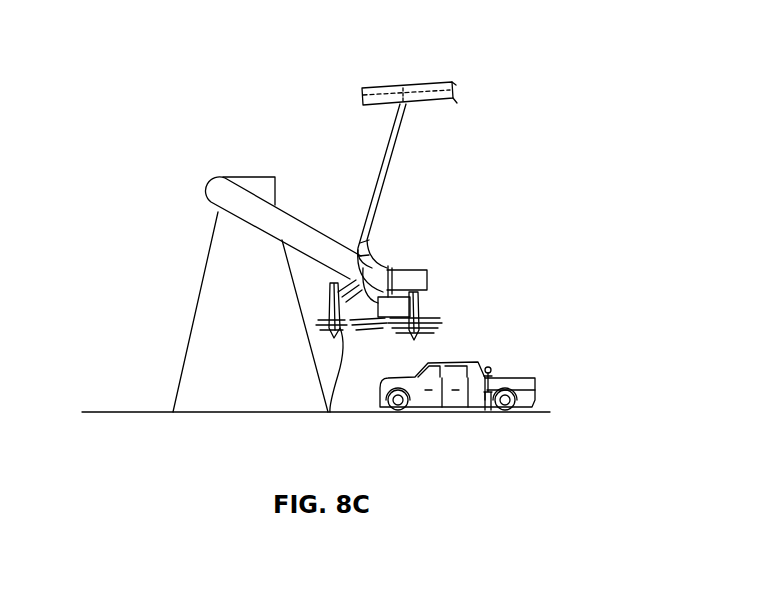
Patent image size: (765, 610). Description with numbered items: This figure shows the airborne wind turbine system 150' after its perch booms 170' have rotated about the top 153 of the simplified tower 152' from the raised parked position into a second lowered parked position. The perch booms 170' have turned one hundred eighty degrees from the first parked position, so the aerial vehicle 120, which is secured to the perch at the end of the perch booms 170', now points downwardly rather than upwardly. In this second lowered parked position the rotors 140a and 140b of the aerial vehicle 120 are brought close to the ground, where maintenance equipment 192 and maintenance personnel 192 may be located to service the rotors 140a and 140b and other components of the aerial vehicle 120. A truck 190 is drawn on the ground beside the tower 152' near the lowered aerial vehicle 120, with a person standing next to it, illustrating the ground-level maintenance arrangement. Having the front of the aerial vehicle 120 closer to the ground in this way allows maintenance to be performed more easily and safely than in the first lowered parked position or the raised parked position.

The airborne wind turbine system 150' is at (311, 249).
The tower 152' is at (217, 312).
The top of tower 153 is at (250, 179).
The perch booms 170' is at (283, 228).
The aerial vehicle 120 is at (420, 199).
The rotor 140a is at (330, 412).
The rotor 140b is at (422, 313).
The truck 190 is at (438, 392).
The maintenance equipment and personnel 192 is at (488, 375).